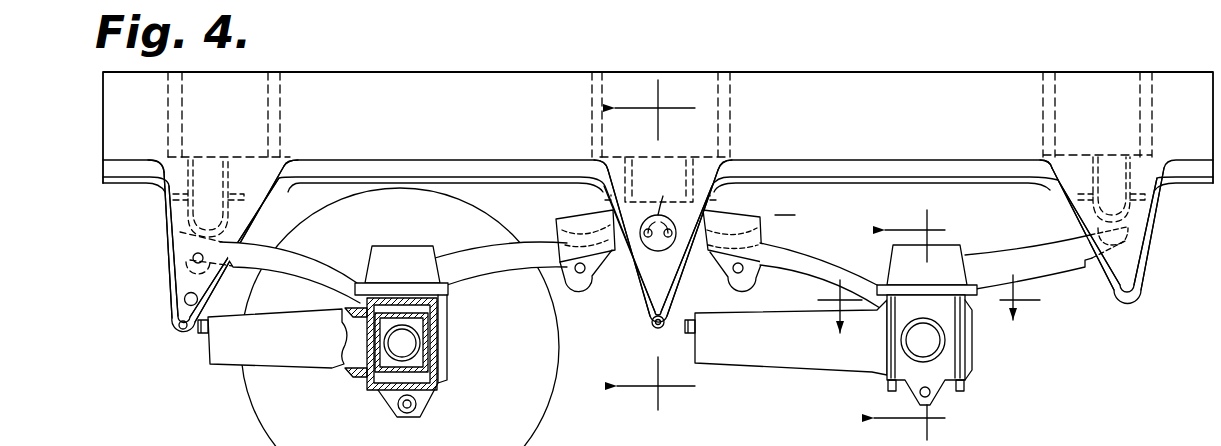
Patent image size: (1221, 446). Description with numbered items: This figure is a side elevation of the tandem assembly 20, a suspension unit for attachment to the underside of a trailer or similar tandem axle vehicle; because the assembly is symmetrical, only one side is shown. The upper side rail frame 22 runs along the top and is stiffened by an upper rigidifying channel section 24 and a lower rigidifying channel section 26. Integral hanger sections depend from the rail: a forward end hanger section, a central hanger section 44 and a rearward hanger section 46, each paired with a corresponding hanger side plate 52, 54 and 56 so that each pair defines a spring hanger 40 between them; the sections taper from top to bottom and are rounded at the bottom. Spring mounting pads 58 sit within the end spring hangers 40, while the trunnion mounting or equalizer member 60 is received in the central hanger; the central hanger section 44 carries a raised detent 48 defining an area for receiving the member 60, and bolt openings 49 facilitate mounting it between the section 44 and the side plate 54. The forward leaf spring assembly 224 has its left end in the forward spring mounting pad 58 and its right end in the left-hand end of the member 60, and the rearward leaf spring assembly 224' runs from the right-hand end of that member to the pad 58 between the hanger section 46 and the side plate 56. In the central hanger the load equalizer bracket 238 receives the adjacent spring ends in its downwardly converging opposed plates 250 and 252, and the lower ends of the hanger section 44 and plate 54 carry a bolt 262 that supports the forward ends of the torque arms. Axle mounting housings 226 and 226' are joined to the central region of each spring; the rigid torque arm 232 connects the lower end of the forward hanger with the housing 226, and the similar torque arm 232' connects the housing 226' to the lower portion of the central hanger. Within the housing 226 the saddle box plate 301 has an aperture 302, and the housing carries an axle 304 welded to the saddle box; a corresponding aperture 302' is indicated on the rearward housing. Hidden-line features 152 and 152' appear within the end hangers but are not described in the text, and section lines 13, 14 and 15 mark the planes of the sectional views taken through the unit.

The tandem assembly 20 is at (1057, 62).
The side rail 22 is at (940, 147).
The upper rigidifying channel section 24 is at (597, 62).
The lower rigidifying channel section 26 is at (103, 178).
The spring hanger 40 is at (148, 290).
The central hanger section 44 is at (712, 210).
The hanger section 46 is at (1077, 219).
The raised area or detent 48 is at (658, 251).
The bolt openings 49 is at (660, 179).
The hanger side plate 52 is at (142, 162).
The hanger side plate 54 is at (581, 166).
The hanger side plate 56 is at (1051, 158).
The spring mounting pad 58 is at (1153, 202).
The trunnion mounting or equalizer member 60 is at (588, 203).
The section line 13 is at (655, 245).
The section line 14 is at (917, 326).
The section line 15 is at (926, 307).
The front shackle 152 is at (170, 217).
The rear shackle 152' is at (1136, 223).
The forward leaf spring assembly 224 is at (393, 262).
The rearward leaf spring assembly 224' is at (820, 260).
The axle mounting housing 226 is at (446, 331).
The axle mounting housing 226' is at (984, 325).
The torque arm 232 is at (274, 363).
The torque arm 232' is at (786, 358).
The load equalizer bracket 238 is at (775, 215).
The opposed plate 250 is at (605, 263).
The opposed plate 252 is at (718, 258).
The bolt 262 is at (652, 330).
The plate 301 is at (430, 321).
The aperture 302 is at (444, 342).
The rear bearing liner 302' is at (976, 363).
The axle 304 is at (407, 352).